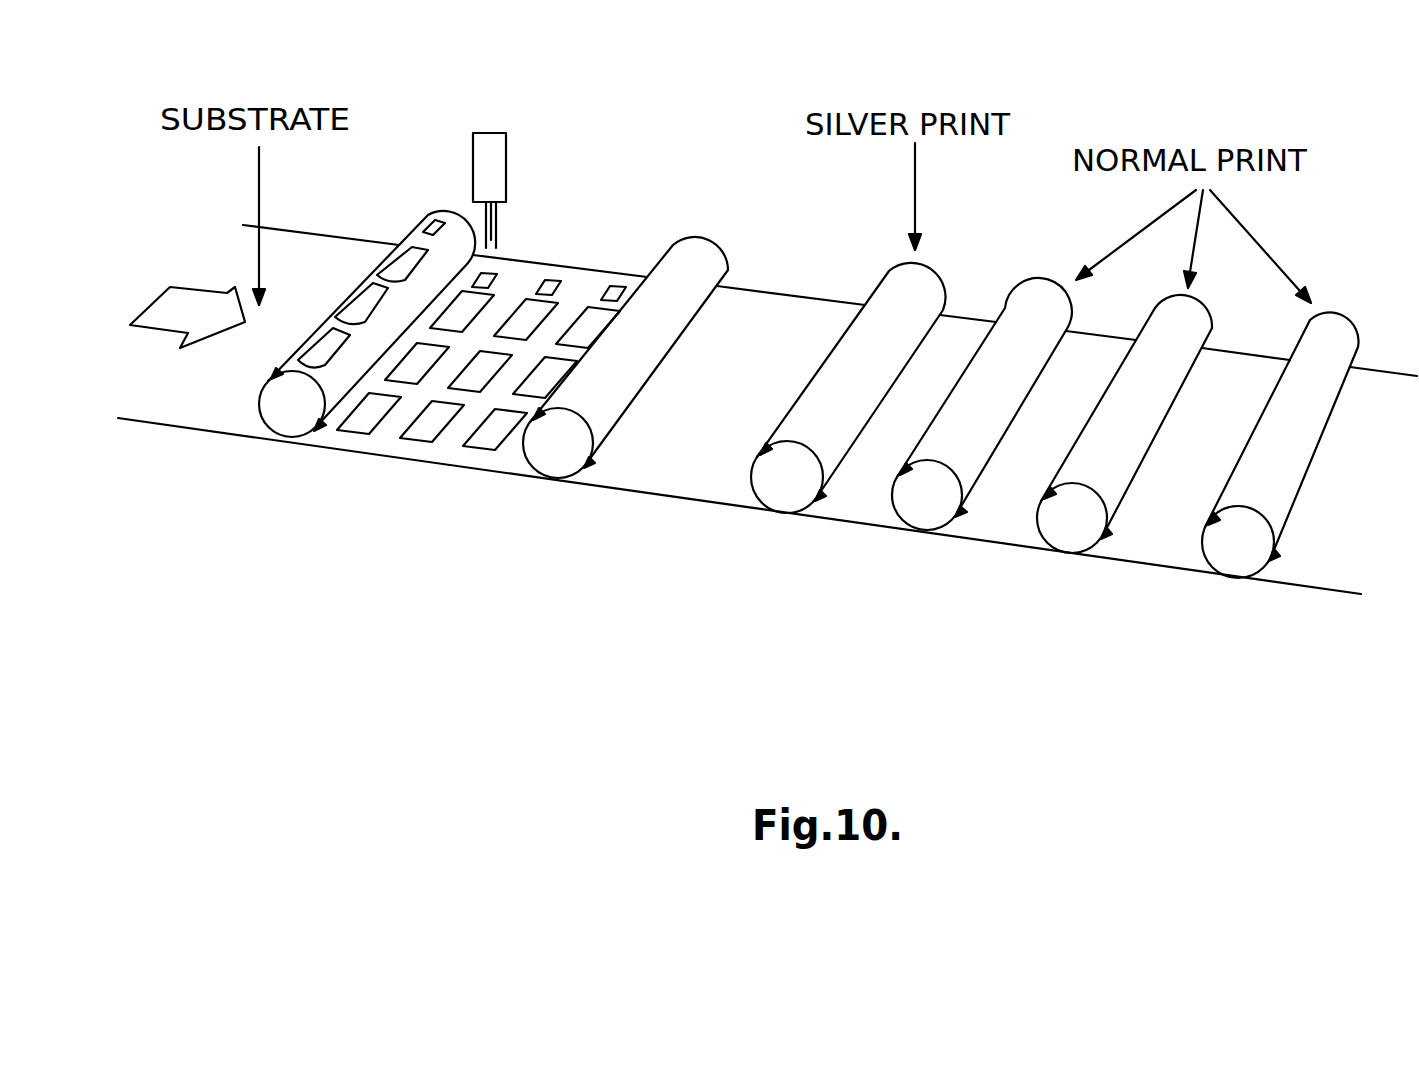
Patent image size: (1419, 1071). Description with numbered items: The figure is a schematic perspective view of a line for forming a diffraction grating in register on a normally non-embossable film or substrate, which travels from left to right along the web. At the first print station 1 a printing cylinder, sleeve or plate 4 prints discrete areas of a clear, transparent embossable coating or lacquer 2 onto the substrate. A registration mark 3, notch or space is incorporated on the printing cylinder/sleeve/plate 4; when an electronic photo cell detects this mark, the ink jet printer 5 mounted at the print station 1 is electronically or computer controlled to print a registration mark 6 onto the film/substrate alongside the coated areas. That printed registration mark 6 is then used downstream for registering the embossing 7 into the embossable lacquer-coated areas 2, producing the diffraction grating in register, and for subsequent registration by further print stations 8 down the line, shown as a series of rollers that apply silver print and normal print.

The print station 1 is at (293, 417).
The embossable coating/lacquer area 2 is at (435, 427).
The registration mark 3 is at (440, 217).
The printing cylinder/sleeve/plate 4 is at (413, 231).
The ink jet printer 5 is at (506, 172).
The registration mark 6 is at (556, 273).
The embossing 7 is at (708, 252).
The further print stations 8 is at (1212, 577).